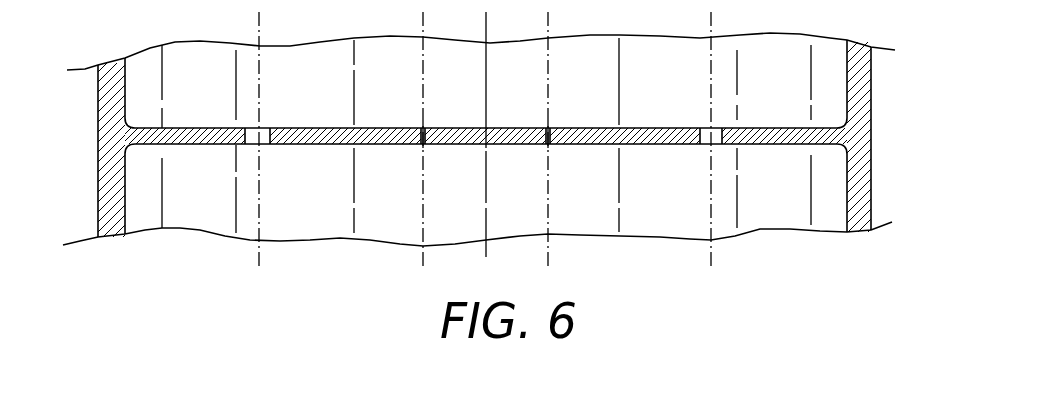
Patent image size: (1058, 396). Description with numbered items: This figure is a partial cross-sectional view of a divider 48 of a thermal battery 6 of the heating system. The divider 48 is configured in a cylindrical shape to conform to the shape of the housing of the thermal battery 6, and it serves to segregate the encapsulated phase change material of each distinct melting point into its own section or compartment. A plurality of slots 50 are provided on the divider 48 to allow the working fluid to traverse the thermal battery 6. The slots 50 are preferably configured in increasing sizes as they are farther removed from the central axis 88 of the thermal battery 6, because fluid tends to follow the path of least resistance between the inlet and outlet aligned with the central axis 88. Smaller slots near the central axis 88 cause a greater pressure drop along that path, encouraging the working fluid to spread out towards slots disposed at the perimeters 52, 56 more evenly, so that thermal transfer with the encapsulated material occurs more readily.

The thermal battery 6 is at (871, 88).
The divider 48 is at (197, 128).
The slots 50 is at (265, 128).
The perimeter 52 is at (420, 25).
The perimeter 56 is at (260, 21).
The central axis 88 is at (486, 257).